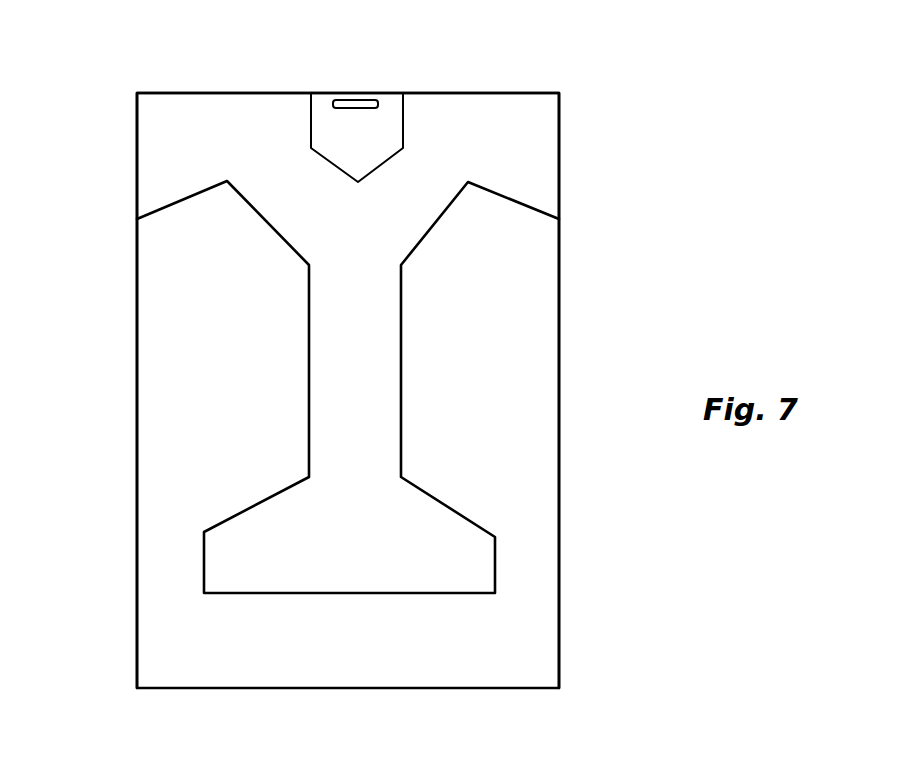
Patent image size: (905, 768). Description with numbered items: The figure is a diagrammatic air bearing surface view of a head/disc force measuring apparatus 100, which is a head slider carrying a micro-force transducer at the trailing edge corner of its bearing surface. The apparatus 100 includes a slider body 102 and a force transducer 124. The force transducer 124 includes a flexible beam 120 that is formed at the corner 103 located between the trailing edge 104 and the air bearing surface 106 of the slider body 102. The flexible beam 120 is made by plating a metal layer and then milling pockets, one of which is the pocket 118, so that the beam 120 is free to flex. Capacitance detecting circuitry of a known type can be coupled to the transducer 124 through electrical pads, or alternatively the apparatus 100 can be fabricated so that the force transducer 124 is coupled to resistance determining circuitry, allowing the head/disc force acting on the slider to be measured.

The head/disc force measuring apparatus 100 is at (125, 80).
The slider body 102 is at (575, 458).
The corner 103 is at (480, 93).
The trailing edge 104 is at (218, 85).
The air bearing surface (ABS) 106 is at (518, 251).
The pocket 118 is at (358, 112).
The flexible beam 120 is at (342, 93).
The force transducer 124 is at (330, 84).